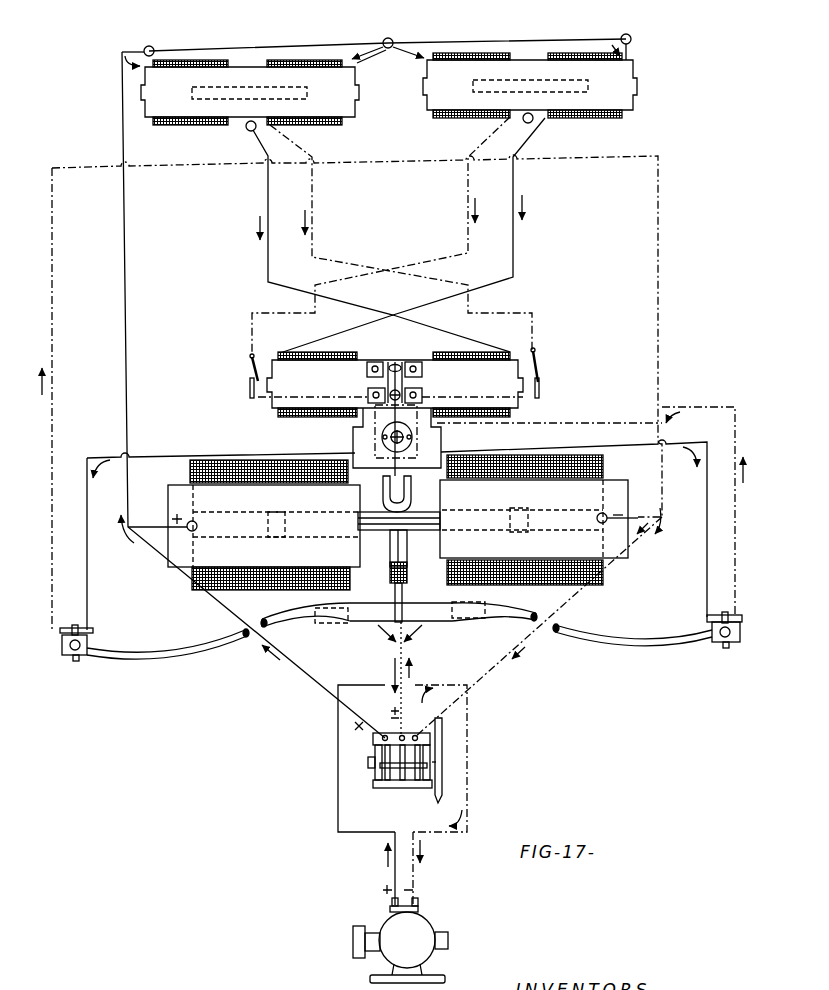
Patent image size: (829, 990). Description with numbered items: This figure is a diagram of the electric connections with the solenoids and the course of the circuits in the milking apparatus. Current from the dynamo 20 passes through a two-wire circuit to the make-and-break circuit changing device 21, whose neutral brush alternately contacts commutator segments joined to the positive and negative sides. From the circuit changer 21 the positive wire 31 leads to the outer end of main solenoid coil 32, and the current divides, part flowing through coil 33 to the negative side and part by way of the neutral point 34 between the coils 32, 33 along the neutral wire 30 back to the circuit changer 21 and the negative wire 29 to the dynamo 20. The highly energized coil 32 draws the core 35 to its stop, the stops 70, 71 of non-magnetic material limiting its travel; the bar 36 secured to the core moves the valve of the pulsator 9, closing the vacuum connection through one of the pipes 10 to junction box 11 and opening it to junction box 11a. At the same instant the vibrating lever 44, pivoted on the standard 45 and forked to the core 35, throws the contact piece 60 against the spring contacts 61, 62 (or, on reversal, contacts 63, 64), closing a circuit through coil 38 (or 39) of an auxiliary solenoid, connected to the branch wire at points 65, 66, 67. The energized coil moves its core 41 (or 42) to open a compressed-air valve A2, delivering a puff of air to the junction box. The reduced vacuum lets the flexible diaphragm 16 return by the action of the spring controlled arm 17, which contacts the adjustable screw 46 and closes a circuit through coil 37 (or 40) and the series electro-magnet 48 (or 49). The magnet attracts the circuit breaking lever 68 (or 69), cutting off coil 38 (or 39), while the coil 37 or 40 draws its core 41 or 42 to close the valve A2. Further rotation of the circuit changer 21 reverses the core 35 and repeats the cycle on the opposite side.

The pulsator 9 is at (366, 625).
The pipes 10 is at (175, 656).
The junction box 11 is at (73, 657).
The junction box 11a is at (712, 645).
The flexible diaphragm 16 is at (62, 650).
The spring controlled arm 17 is at (76, 628).
The dynamo 20 is at (400, 940).
The make-and-break circuit changing device 21 is at (374, 765).
The negative wire 29 is at (664, 308).
The neutral wire 30 is at (405, 678).
The positive wire 31 is at (126, 358).
The main solenoid coil 32 is at (200, 470).
The main solenoid coil 33 is at (604, 471).
The neutral point 34 is at (402, 640).
The core 35 is at (386, 531).
The bar 36 is at (406, 533).
The auxiliary solenoid coil 37 is at (203, 125).
The auxiliary solenoid coil 38 is at (318, 125).
The auxiliary solenoid coil 39 is at (477, 113).
The auxiliary solenoid coil 40 is at (593, 110).
The core 41 is at (235, 90).
The core 42 is at (513, 80).
The vibrating lever 44 is at (407, 494).
The standard 45 is at (382, 437).
The adjustable screw 46 is at (60, 630).
The electro-magnet 48 is at (518, 410).
The electro-magnet 49 is at (287, 413).
The contact piece 60 is at (395, 362).
The spring contact 61 is at (422, 368).
The spring contact 62 is at (422, 395).
The spring contact 63 is at (367, 368).
The spring contact 64 is at (368, 395).
The connection point 65 is at (150, 46).
The connection point 66 is at (388, 41).
The connection point 67 is at (627, 34).
The circuit breaking lever 68 is at (540, 366).
The circuit breaking lever 69 is at (249, 366).
The stop 70 is at (222, 528).
The stop 71 is at (573, 523).
The compressed-air valve A2 is at (246, 128).